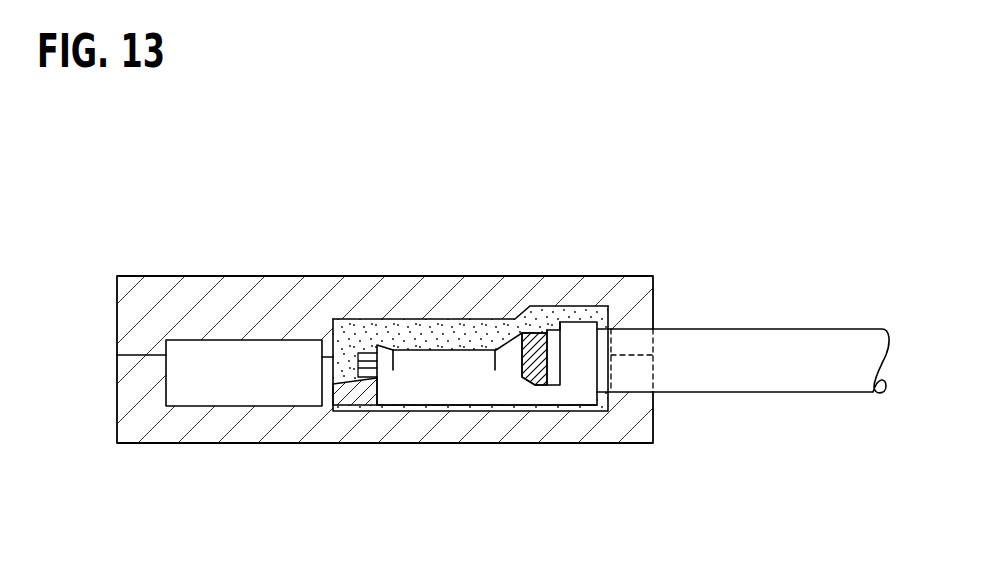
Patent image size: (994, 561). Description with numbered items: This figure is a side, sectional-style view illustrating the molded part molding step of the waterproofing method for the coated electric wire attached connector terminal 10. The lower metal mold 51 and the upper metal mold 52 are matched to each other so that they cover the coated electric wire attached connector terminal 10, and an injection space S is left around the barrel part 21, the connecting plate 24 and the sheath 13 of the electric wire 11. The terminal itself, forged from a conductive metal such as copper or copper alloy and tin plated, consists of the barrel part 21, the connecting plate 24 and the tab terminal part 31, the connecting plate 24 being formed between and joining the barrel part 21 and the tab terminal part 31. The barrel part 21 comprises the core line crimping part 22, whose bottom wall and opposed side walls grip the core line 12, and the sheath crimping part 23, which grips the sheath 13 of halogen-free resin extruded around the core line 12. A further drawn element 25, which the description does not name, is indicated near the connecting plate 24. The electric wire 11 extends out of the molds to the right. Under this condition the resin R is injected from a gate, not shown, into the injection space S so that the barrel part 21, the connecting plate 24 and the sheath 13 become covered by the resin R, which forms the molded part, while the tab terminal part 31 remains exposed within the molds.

The coated electric wire attached connector terminal 10 is at (598, 304).
The electric wire 11 is at (829, 328).
The core line 12 is at (531, 340).
The sheath 13 is at (725, 335).
The barrel part 21 is at (470, 332).
The core line crimping part 22 is at (440, 335).
The sheath crimping part 23 is at (572, 320).
The connecting plate 24 is at (343, 380).
The contact piece portion 25 is at (339, 398).
The tab terminal part 31 is at (235, 338).
The lower metal mold 51 is at (202, 438).
The upper metal mold 52 is at (142, 277).
The injection space S is at (373, 333).
The resin R is at (408, 330).